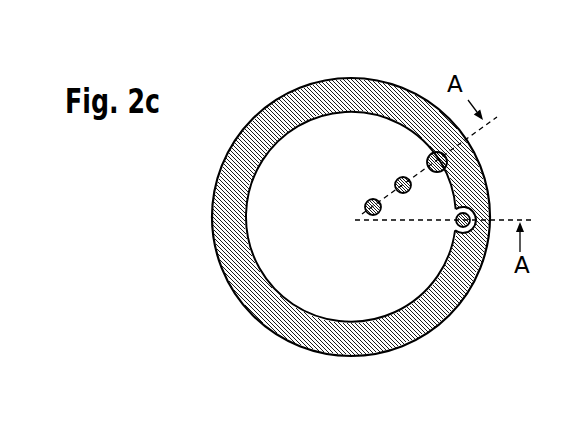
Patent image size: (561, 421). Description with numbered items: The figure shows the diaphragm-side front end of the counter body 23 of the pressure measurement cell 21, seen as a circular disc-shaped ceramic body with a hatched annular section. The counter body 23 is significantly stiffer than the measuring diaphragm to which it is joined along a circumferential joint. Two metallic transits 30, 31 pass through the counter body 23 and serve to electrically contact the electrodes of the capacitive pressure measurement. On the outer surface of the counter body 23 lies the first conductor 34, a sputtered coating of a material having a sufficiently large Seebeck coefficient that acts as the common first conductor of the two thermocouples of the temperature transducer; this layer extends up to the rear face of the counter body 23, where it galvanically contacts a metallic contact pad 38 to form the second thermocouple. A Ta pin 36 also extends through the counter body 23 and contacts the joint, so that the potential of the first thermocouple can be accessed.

The pressure measurement cell 21 is at (246, 94).
The counter body 23 is at (336, 217).
The first conductor 34 is at (315, 217).
The metallic transit 30 is at (371, 199).
The metallic transit 31 is at (398, 177).
The metallic contact pad 38 is at (480, 170).
The Ta pin 36 is at (479, 262).